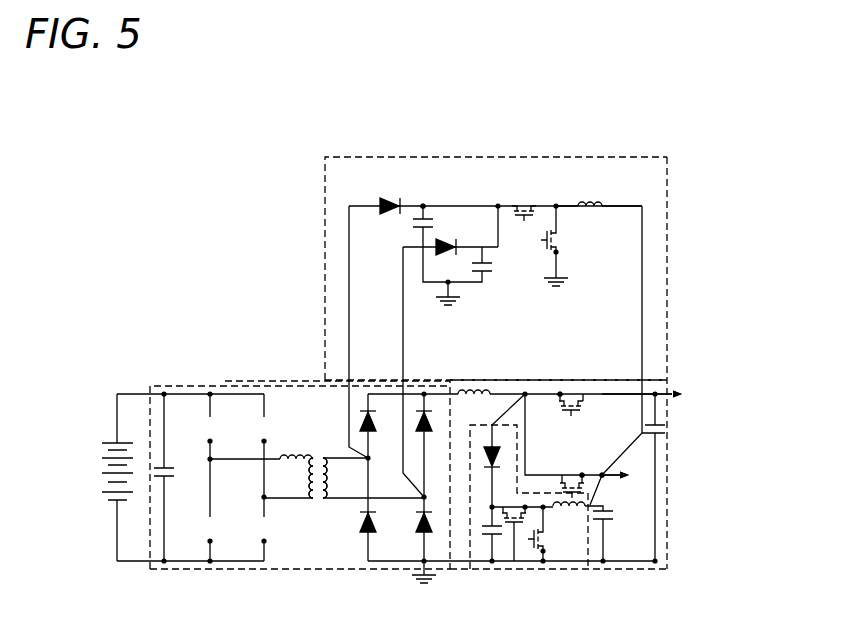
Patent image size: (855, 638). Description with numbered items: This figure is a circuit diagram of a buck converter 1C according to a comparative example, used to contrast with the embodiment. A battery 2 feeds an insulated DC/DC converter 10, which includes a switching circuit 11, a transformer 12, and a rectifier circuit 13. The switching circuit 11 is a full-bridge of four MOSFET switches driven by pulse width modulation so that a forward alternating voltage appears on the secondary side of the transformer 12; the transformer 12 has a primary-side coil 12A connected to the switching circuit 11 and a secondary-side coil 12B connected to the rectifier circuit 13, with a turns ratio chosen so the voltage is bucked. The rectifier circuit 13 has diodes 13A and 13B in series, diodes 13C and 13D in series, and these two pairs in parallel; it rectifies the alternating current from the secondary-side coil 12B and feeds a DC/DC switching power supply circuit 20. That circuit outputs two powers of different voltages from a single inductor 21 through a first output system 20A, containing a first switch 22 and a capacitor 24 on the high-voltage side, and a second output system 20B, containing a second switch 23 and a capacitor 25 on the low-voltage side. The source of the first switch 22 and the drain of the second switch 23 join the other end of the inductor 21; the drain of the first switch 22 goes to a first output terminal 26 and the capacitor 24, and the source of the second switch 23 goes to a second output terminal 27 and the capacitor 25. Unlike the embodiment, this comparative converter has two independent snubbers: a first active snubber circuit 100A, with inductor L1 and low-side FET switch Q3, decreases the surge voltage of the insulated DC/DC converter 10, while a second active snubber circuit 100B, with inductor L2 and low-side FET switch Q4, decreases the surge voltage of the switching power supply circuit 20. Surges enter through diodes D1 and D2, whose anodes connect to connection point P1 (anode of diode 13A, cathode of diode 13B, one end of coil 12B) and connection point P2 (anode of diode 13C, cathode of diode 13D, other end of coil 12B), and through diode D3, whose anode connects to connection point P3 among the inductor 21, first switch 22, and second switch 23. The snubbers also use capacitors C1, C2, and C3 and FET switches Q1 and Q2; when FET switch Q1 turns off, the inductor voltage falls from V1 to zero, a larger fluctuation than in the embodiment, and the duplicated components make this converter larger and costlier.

The buck converter 1C is at (674, 151).
The first active snubber circuit 100A is at (616, 149).
The second active snubber circuit 100B is at (586, 570).
The insulated DC/DC converter 10 is at (188, 383).
The switching circuit 11 is at (235, 388).
The transformer 12 is at (316, 452).
The primary-side coil 12A is at (312, 499).
The secondary-side coil 12B is at (325, 499).
The rectifier circuit 13 is at (396, 383).
The diode 13A is at (360, 423).
The diode 13B is at (372, 535).
The diode 13C is at (416, 408).
The diode 13D is at (428, 535).
The connection point P1 is at (364, 457).
The connection point P2 is at (421, 499).
The connection point P3 is at (558, 392).
The battery 2 is at (103, 492).
The diode D1 is at (384, 201).
The diode D2 is at (442, 243).
The diode D3 is at (497, 441).
The capacitor C1 is at (431, 221).
The capacitor C2 is at (481, 272).
The capacitor C3 is at (490, 540).
The voltage V1 is at (424, 194).
The FET switch Q1 is at (535, 213).
The FET switch Q2 is at (517, 545).
The low-side FET switch Q3 is at (544, 252).
The low-side FET switch Q4 is at (545, 552).
The inductor L1 is at (602, 205).
The inductor L2 is at (578, 512).
The DC/DC switching power supply circuit 20 is at (683, 378).
The first output system 20A is at (686, 392).
The second output system 20B is at (632, 473).
The inductor 21 is at (481, 386).
The first switch 22 is at (566, 481).
The second switch 23 is at (567, 474).
The capacitor 24 is at (665, 425).
The capacitor 25 is at (610, 512).
The first output terminal 26 is at (661, 382).
The second output terminal 27 is at (603, 467).